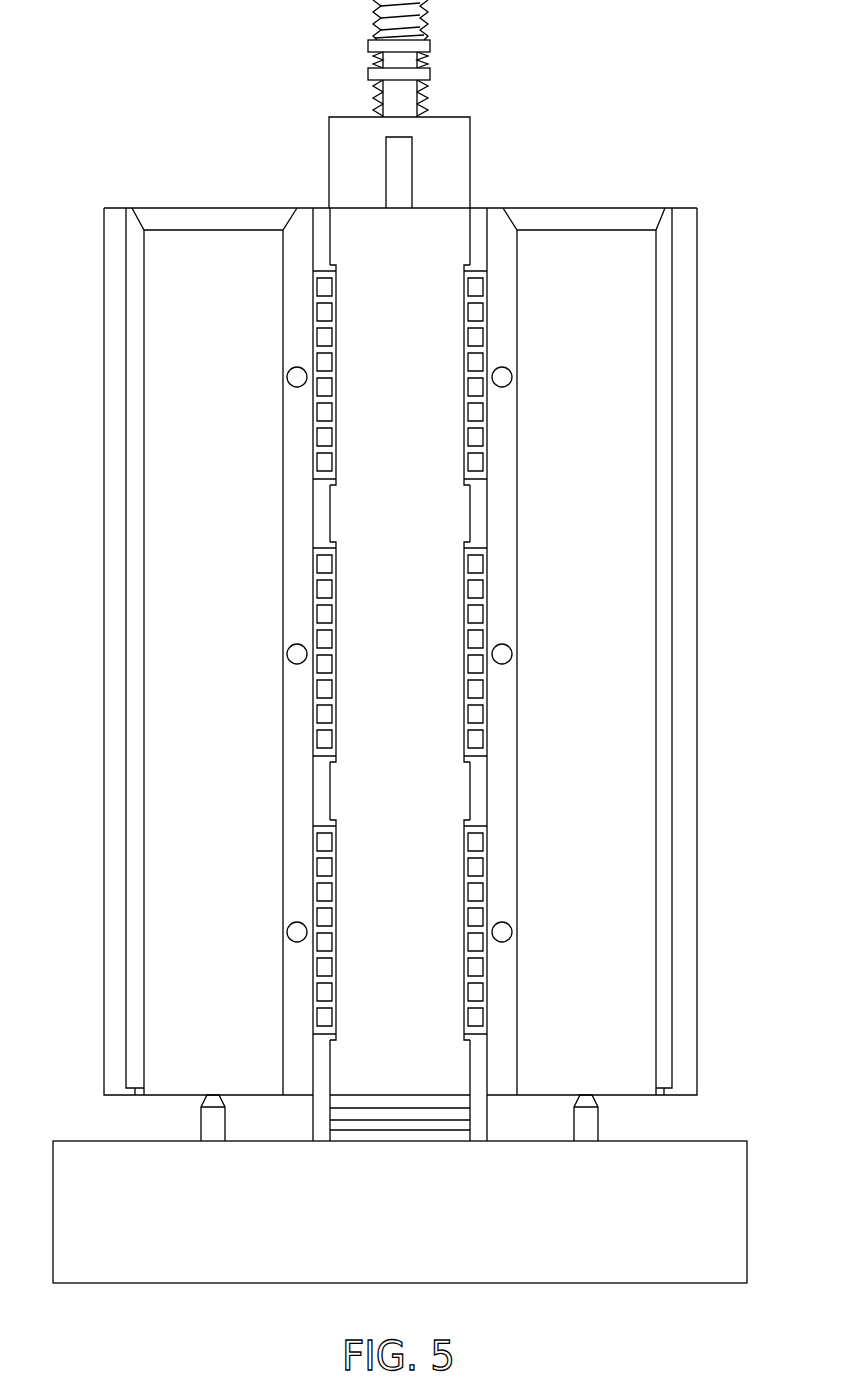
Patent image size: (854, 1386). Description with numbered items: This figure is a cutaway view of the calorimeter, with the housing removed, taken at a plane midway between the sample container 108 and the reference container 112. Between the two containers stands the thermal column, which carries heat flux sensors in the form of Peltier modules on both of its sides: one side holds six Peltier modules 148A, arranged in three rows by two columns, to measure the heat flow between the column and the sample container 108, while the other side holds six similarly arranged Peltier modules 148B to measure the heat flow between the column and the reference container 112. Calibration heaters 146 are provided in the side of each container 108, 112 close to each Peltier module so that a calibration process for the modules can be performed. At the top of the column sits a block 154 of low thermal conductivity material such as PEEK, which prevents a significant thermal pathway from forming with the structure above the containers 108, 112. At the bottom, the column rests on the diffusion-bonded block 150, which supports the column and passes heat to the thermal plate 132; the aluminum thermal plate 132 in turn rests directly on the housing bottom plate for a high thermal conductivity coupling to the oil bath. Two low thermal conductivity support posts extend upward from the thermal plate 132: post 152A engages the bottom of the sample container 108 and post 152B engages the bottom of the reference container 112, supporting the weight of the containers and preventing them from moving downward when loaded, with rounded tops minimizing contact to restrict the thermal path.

The block of low thermal conductivity material 154 is at (463, 166).
The sample container 108 is at (228, 697).
The reference container 112 is at (610, 697).
The Peltier modules 148A is at (336, 1040).
The Peltier modules 148B is at (464, 1040).
The calibration heaters 146 is at (287, 375).
The diffusion-bonded block 150 is at (308, 1140).
The support post 152A is at (200, 1135).
The support post 152B is at (599, 1135).
The thermal plate 132 is at (407, 1231).